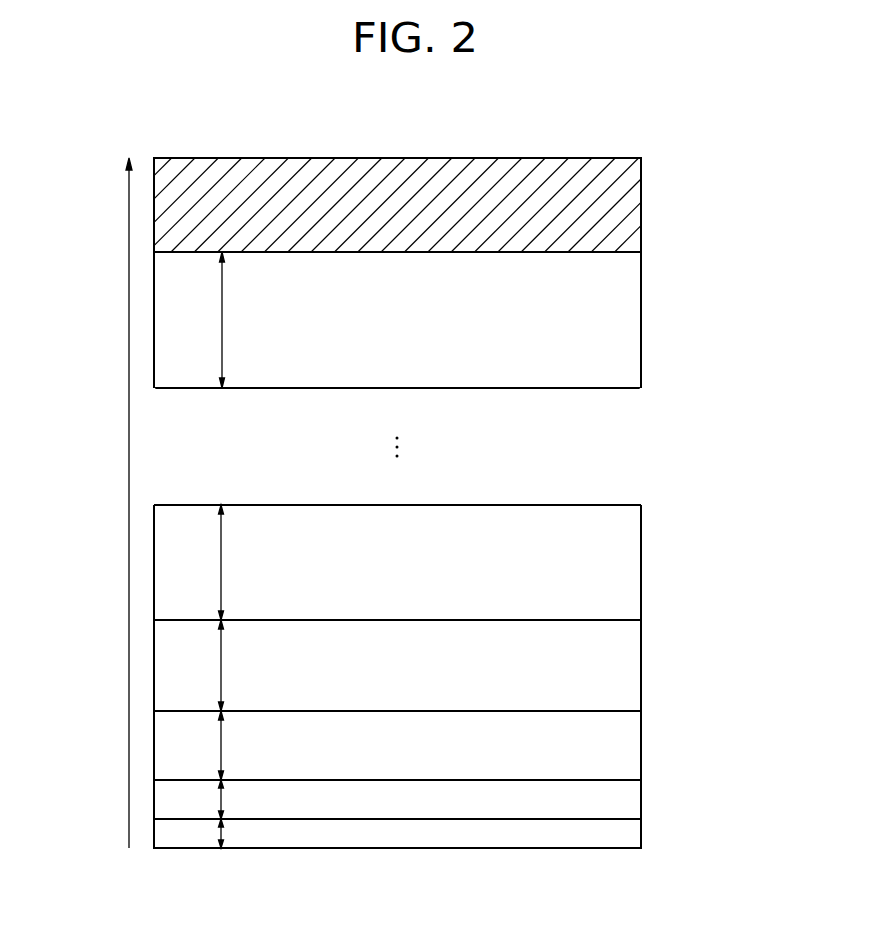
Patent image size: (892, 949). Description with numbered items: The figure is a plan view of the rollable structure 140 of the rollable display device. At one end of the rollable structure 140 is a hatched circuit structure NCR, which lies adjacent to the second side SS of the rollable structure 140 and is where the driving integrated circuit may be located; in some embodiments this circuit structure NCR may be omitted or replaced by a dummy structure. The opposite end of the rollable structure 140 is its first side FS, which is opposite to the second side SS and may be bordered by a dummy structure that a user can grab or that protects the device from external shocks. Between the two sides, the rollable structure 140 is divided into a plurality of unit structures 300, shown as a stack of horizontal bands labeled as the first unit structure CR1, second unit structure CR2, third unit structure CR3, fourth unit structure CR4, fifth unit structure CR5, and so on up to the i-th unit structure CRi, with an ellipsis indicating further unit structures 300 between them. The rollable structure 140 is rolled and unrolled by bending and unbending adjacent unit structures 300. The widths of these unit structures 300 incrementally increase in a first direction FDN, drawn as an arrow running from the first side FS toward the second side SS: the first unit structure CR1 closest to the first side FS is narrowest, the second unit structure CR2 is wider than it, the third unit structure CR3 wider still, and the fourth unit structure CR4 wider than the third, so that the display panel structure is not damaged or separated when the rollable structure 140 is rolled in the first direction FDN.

The rollable structure 140 is at (397, 488).
The unit structures 300 is at (429, 548).
The circuit structure NCR is at (397, 205).
The second side SS is at (593, 158).
The first side FS is at (593, 848).
The i-th unit structure CRi is at (397, 378).
The fifth unit structure CR5 is at (397, 562).
The fourth unit structure CR4 is at (397, 683).
The third unit structure CR3 is at (397, 758).
The second unit structure CR2 is at (397, 804).
The first unit structure CR1 is at (397, 835).
The first direction FDN is at (107, 503).